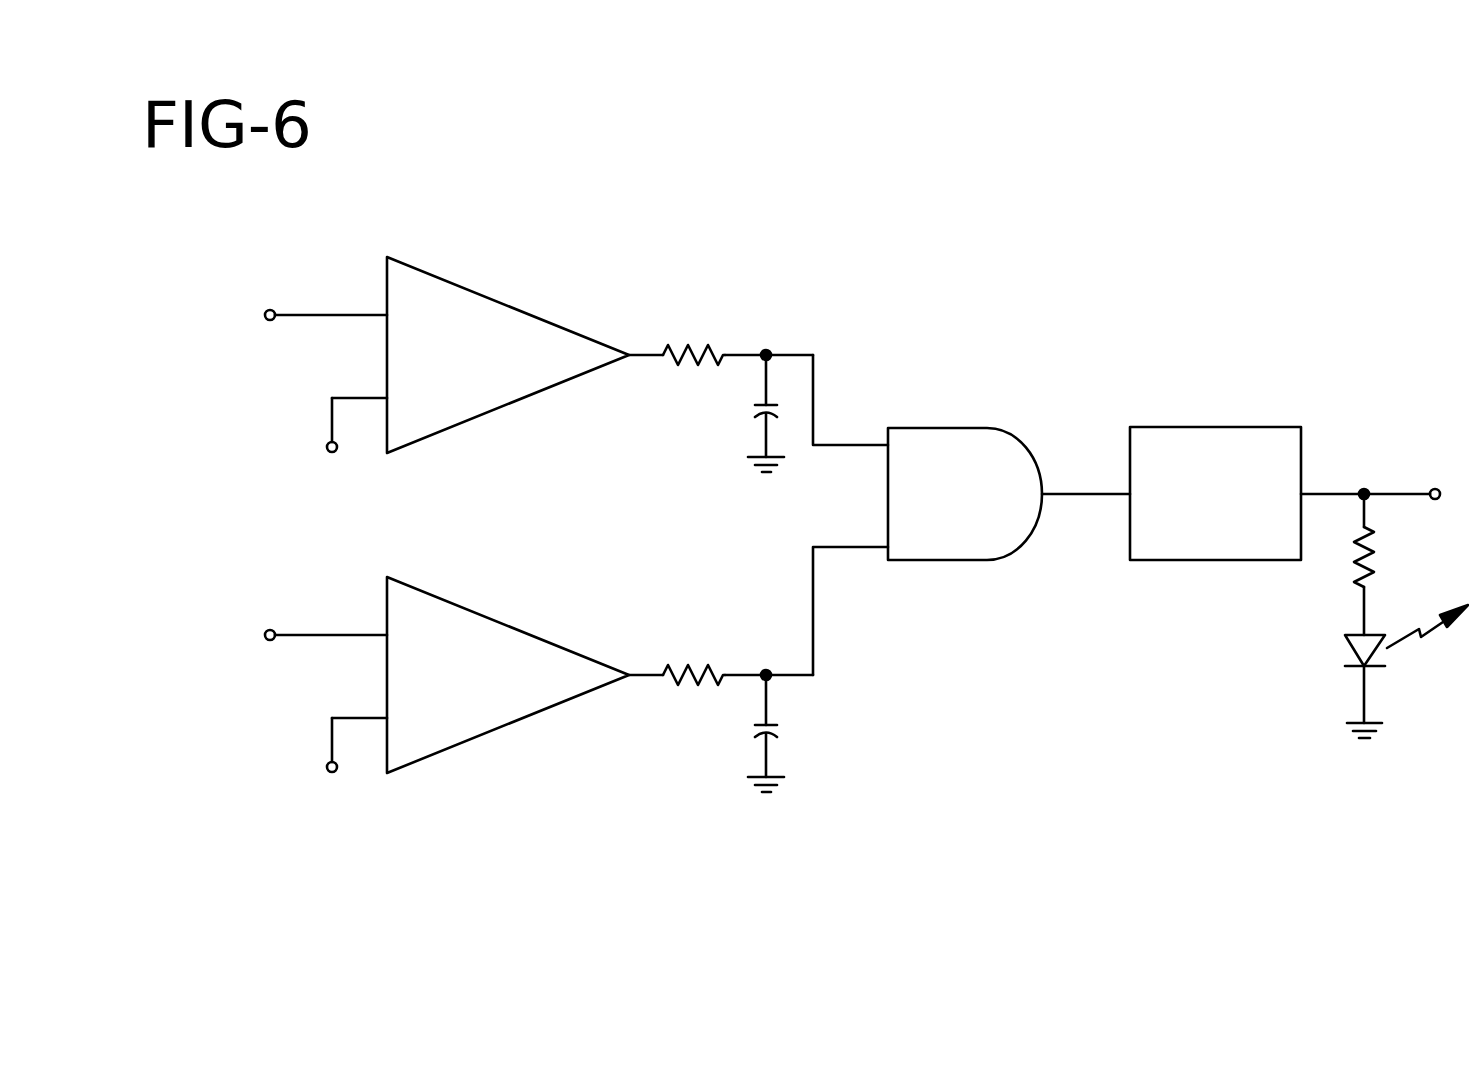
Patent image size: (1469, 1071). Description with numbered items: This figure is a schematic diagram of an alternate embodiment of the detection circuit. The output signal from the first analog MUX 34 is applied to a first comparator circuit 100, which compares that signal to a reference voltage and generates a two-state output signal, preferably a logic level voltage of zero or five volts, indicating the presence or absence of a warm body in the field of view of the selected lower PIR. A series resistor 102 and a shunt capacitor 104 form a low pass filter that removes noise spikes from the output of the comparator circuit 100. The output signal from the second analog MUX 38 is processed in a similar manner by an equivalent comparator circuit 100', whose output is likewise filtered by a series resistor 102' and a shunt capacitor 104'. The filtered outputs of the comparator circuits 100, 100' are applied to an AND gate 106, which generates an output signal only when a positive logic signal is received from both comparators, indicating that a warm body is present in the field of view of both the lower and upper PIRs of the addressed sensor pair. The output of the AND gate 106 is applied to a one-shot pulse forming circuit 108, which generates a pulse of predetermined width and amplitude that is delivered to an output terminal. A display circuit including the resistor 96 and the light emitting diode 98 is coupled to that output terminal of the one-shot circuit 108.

The first analog MUX 34 is at (265, 345).
The second analog MUX 38 is at (265, 666).
The first comparator circuit 100 is at (466, 379).
The comparator circuit 100' is at (466, 699).
The series resistor 102 is at (701, 323).
The series resistor 102' is at (705, 643).
The shunt capacitor 104 is at (722, 413).
The shunt capacitor 104' is at (722, 733).
The AND gate 106 is at (928, 428).
The one-shot 108 is at (1177, 427).
The resistor 96 is at (1357, 562).
The light emitting diode 98 is at (1348, 648).